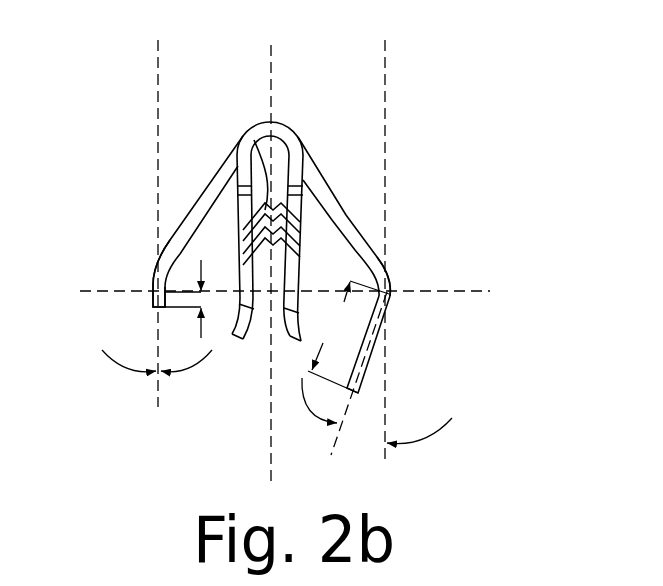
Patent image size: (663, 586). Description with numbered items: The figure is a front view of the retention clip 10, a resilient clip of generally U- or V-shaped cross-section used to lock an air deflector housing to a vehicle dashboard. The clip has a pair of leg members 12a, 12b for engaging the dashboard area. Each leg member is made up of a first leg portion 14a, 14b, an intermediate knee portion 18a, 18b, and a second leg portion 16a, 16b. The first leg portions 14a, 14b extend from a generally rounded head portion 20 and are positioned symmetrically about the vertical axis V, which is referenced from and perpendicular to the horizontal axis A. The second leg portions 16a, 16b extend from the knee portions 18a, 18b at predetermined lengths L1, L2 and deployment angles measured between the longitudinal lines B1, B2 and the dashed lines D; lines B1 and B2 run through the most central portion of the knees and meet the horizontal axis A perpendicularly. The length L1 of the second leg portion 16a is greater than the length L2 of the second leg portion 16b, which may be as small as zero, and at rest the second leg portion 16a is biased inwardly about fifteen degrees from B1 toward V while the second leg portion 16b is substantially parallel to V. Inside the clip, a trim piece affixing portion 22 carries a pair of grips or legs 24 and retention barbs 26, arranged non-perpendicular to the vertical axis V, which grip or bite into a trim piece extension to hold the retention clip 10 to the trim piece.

The retention clip 10 is at (312, 97).
The leg member 12a is at (350, 222).
The leg member 12b is at (186, 223).
The first leg portion 14a is at (330, 183).
The first leg portion 14b is at (213, 208).
The second leg portion 16a is at (367, 340).
The second leg portion 16b is at (155, 287).
The intermediate knee portion 18a is at (392, 280).
The intermediate knee portion 18b is at (157, 268).
The head portion 20 is at (265, 120).
The trim piece affixing portion 22 is at (262, 333).
The grips or legs 24 is at (295, 275).
The retention barbs 26 is at (287, 201).
The length of second leg portion 16a L1 is at (348, 337).
The length of second leg portion 16b L2 is at (198, 299).
The horizontal axis A is at (295, 290).
The longitudinal line B1 is at (386, 236).
The longitudinal line B2 is at (160, 210).
The vertical axis V is at (272, 251).
The dashed line D is at (271, 385).